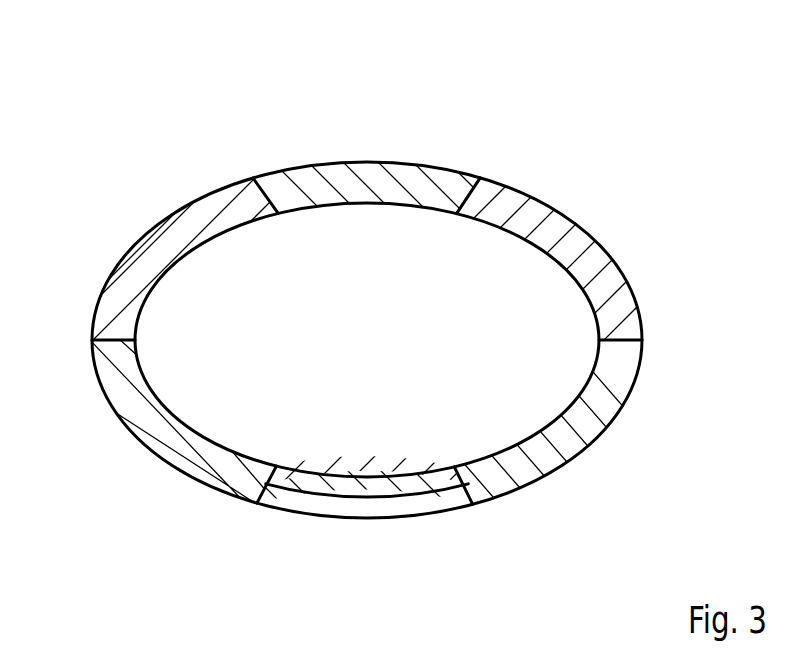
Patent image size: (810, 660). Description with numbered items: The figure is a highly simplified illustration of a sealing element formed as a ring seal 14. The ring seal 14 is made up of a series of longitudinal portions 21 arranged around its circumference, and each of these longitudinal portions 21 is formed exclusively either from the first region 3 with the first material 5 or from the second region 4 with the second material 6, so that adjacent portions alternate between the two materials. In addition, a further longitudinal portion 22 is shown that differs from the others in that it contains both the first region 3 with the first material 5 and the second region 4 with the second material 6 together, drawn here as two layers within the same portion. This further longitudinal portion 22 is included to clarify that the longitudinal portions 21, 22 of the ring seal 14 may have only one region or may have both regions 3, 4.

The ring seal 14 is at (401, 336).
The first region 3 is at (431, 382).
The first material 5 is at (181, 229).
The second region 4 is at (365, 367).
The second material 6 is at (355, 183).
The longitudinal portions 21 is at (401, 367).
The further longitudinal portion 22 is at (298, 505).